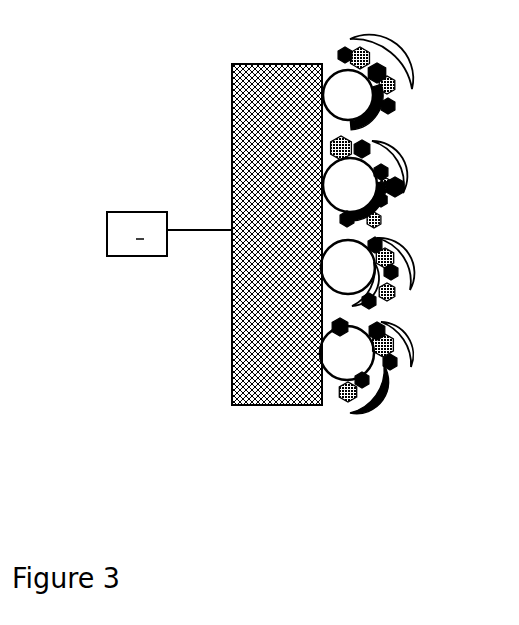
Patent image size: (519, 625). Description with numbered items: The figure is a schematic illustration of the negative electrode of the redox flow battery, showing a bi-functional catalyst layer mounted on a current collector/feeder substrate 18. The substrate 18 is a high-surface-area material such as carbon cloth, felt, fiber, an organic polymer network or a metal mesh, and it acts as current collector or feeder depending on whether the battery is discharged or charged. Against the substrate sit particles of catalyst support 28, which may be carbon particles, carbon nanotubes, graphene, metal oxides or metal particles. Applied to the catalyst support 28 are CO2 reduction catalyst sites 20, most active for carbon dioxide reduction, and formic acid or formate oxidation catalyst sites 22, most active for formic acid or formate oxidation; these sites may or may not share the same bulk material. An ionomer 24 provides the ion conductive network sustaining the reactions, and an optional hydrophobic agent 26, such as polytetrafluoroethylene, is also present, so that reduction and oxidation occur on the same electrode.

The current collector/feeder substrate 18 is at (256, 355).
The CO2 reduction catalyst sites 20 is at (396, 111).
The formic acid (or formate) oxidation catalyst sites 22 is at (394, 89).
The ionomer 24 is at (402, 253).
The hydrophobic agent 26 is at (382, 389).
The catalyst support 28 is at (340, 356).